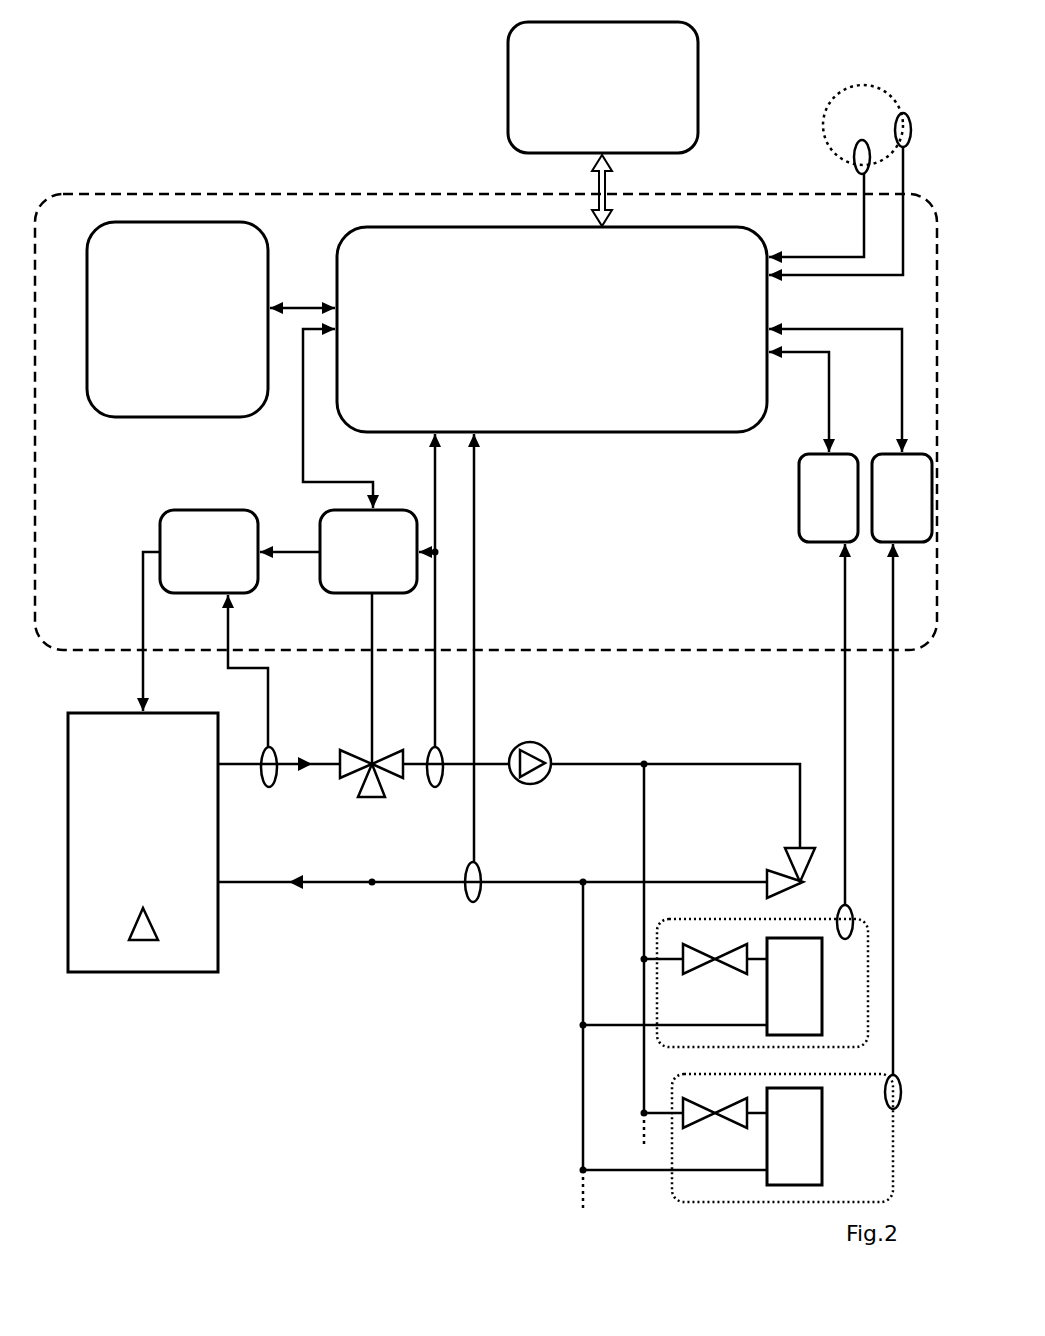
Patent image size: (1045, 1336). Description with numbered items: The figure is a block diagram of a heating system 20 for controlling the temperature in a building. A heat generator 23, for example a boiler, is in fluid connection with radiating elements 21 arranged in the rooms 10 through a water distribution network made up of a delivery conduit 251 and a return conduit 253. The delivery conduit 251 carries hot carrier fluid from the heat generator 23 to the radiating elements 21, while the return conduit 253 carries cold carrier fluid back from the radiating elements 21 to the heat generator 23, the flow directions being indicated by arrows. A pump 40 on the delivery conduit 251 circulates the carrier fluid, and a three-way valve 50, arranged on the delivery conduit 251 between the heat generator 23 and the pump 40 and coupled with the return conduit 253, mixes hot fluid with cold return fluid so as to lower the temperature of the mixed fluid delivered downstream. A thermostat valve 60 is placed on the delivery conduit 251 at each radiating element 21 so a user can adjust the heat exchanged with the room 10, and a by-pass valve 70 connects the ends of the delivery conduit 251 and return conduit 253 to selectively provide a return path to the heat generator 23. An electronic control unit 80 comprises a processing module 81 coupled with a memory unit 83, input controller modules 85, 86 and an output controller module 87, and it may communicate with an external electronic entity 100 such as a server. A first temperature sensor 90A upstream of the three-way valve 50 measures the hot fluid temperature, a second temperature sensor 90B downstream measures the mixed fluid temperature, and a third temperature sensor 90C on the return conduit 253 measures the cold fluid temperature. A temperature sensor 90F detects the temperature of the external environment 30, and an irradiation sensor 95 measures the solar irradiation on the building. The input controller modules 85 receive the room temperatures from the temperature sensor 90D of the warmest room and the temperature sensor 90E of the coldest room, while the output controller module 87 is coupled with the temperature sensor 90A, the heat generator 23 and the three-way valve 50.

The external electronic entity 100 is at (584, 100).
The electronic control unit 80 is at (57, 632).
The memory unit 83 is at (164, 333).
The processing module 81 is at (539, 340).
The output controller module 87 is at (196, 564).
The input controller module 86 is at (355, 564).
The input controller module 85 is at (815, 510).
The external environment 30 is at (850, 137).
The irradiation sensor 95 is at (855, 145).
The temperature sensor 90F is at (906, 114).
The heat generator 23 is at (203, 972).
The three-way valve 50 is at (357, 757).
The pump 40 is at (550, 740).
The delivery conduit 251 is at (698, 760).
The return conduit 253 is at (550, 887).
The by-pass valve 70 is at (788, 850).
The thermostat valve 60 is at (687, 947).
The radiating element 21 is at (782, 1002).
The room 10 is at (832, 1042).
The first temperature sensor 90A is at (274, 792).
The second temperature sensor 90B is at (432, 791).
The third temperature sensor 90C is at (468, 905).
The temperature sensor 90D is at (849, 904).
The temperature sensor 90E is at (899, 1078).
The heating system 20 is at (299, 1116).